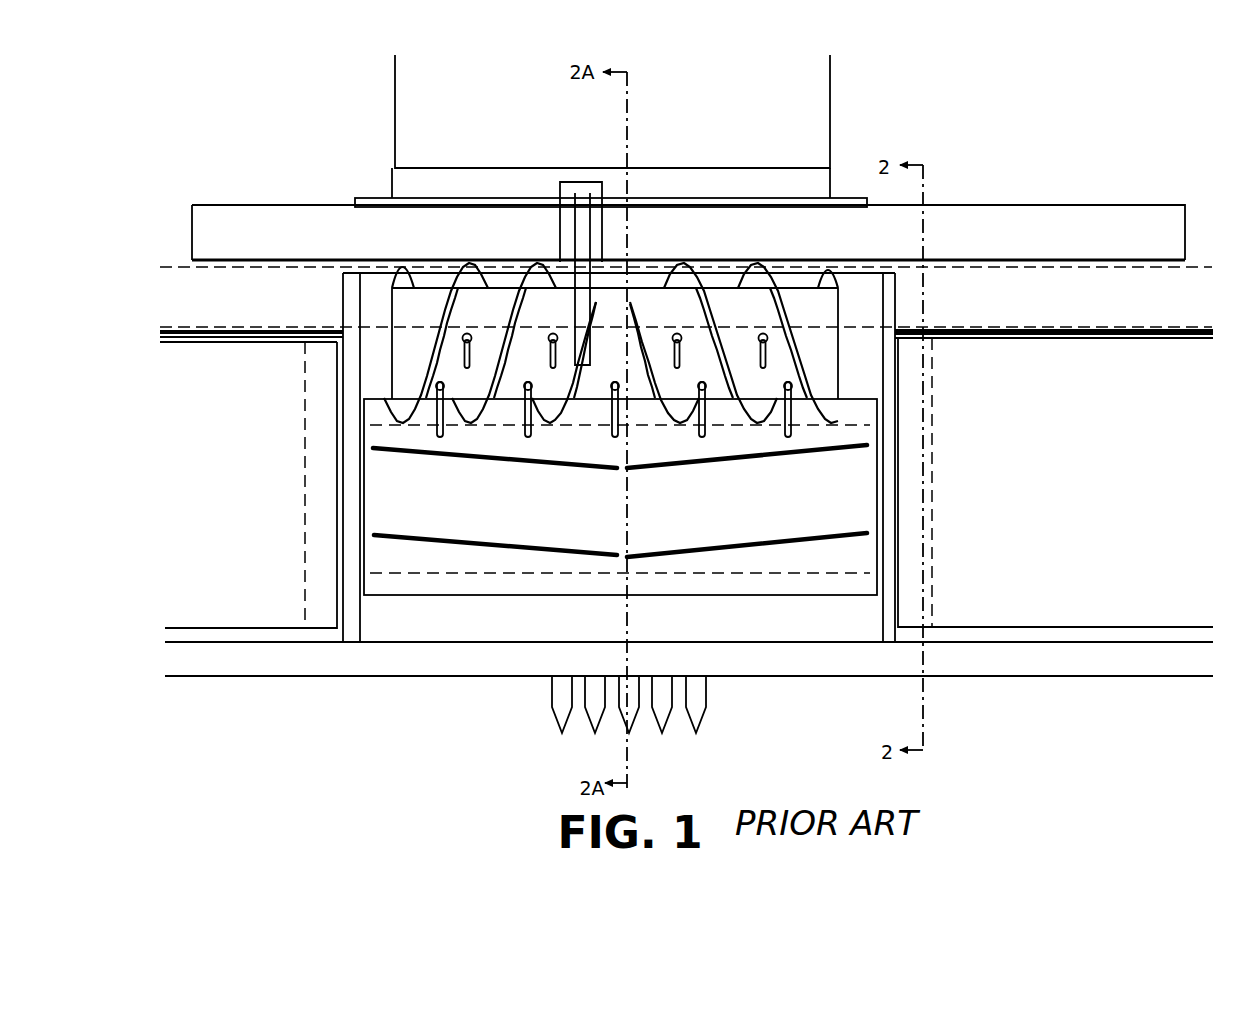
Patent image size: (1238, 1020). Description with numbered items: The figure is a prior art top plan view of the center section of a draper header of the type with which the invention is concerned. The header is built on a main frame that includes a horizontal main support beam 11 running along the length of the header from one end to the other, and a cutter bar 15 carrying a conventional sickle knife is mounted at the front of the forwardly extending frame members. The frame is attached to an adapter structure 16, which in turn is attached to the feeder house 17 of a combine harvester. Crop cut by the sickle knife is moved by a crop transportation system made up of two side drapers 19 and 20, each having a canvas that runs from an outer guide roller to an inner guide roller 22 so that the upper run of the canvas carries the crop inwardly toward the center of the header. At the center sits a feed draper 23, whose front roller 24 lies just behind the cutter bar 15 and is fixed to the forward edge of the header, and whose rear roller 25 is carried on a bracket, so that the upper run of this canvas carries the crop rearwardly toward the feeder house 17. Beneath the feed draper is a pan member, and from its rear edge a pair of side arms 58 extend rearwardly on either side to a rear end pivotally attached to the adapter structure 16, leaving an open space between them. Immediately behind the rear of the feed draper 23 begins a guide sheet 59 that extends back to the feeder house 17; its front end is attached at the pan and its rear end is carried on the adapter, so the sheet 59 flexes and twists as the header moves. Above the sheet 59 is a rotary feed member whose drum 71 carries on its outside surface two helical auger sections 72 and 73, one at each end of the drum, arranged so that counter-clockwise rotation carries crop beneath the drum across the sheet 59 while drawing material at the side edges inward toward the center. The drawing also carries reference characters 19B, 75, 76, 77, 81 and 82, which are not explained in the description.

The main support beam 11 is at (295, 336).
The cutter bar 15 is at (848, 659).
The adapter structure 16 is at (392, 220).
The feeder house 17 is at (413, 93).
The side draper 19 is at (1063, 603).
The right side rail 19B is at (992, 340).
The side draper 20 is at (218, 596).
The inner guide roller 22 is at (305, 602).
The feed draper 23 is at (555, 525).
The front roller 24 is at (777, 582).
The rear roller 25 is at (808, 428).
The side arms 58 is at (643, 410).
The guide sheet 59 is at (513, 408).
The drum 71 is at (730, 406).
The helical auger section 72 is at (817, 410).
The helical auger section 73 is at (491, 403).
The center rod 75 is at (616, 416).
The right housing wall 76 is at (888, 287).
The left housing wall 77 is at (348, 290).
The right rail 81 is at (1062, 340).
The left rail 82 is at (218, 338).